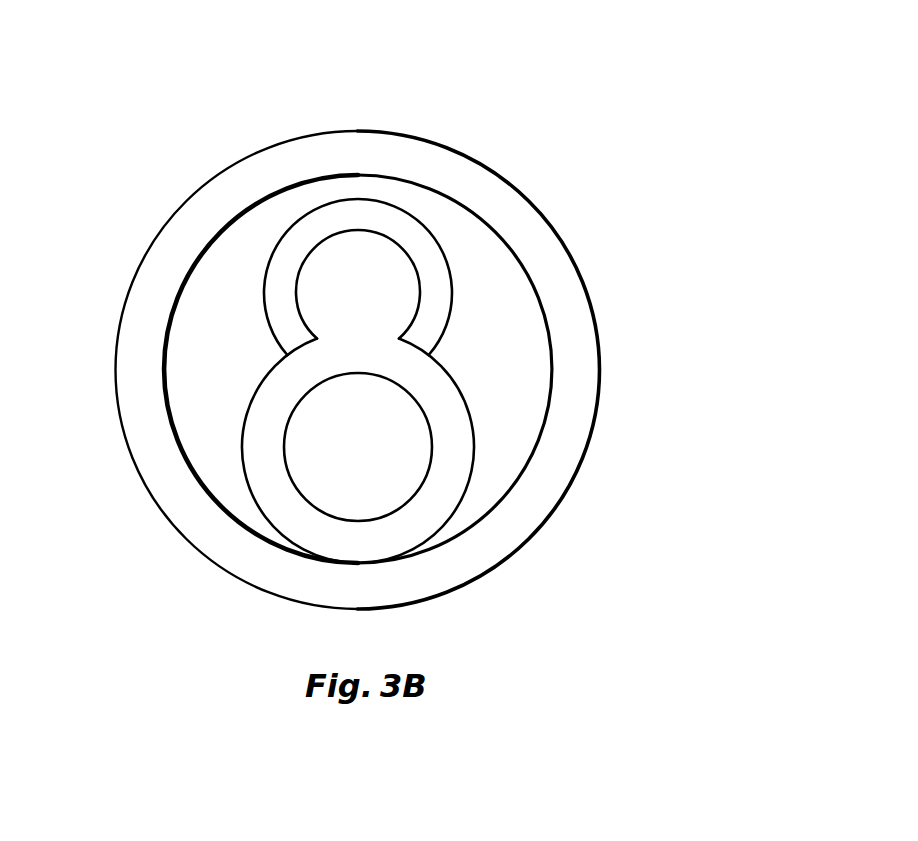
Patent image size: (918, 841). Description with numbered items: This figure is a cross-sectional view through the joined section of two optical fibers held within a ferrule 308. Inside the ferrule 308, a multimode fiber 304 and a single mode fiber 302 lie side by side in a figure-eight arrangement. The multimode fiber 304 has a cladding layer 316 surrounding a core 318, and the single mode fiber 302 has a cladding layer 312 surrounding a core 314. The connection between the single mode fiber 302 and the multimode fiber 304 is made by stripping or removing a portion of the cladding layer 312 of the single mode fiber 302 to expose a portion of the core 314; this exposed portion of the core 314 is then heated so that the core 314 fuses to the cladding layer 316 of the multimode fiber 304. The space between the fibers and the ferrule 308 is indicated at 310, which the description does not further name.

The single mode fiber 302 is at (437, 235).
The multimode fiber 304 is at (252, 493).
The ferrule 308 is at (432, 152).
The annular space 310 is at (532, 385).
The cladding layer 312 is at (440, 272).
The core 314 is at (403, 297).
The cladding layer 316 is at (463, 462).
The core 318 is at (387, 483).